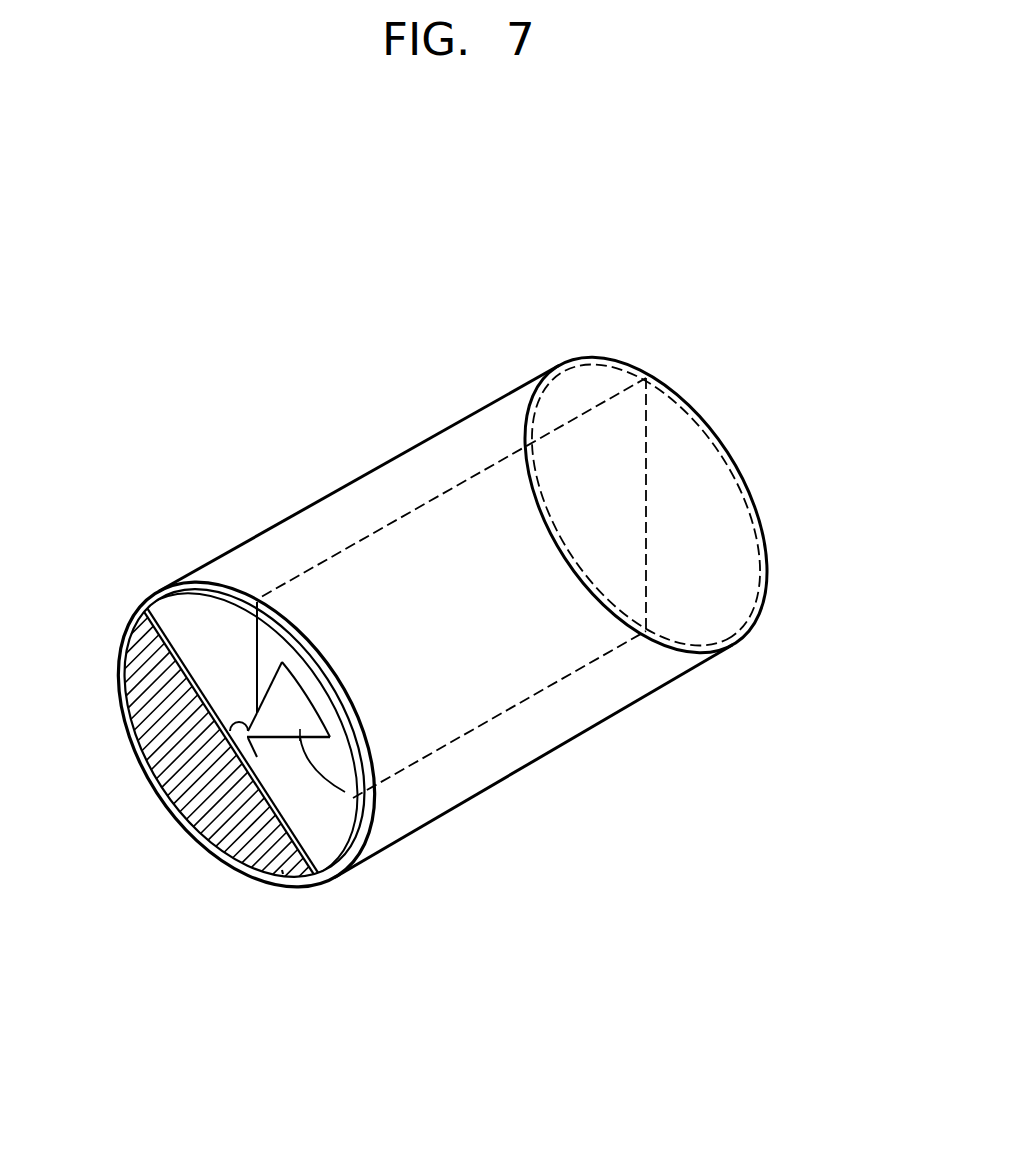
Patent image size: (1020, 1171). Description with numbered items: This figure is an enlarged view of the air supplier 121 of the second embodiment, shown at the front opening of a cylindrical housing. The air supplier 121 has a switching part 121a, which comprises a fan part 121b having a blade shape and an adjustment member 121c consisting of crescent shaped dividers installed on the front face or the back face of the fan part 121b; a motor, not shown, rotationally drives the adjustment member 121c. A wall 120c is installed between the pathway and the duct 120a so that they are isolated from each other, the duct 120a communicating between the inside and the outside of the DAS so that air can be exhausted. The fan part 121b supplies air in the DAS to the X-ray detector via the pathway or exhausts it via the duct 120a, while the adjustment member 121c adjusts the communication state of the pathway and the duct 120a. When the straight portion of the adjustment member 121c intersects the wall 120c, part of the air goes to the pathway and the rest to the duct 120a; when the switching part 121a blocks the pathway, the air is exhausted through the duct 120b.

The duct 120a is at (714, 463).
The duct 120b is at (503, 412).
The wall 120c is at (483, 702).
The air supplier 121 is at (149, 553).
The switching part 121a is at (133, 588).
The fan part 121b is at (345, 792).
The adjustment member 121c is at (282, 870).